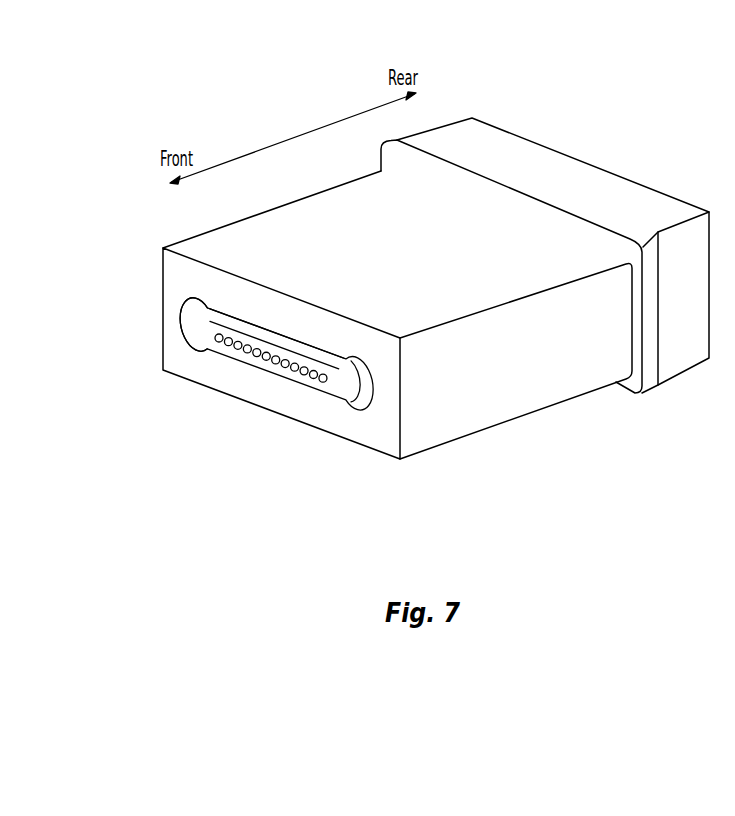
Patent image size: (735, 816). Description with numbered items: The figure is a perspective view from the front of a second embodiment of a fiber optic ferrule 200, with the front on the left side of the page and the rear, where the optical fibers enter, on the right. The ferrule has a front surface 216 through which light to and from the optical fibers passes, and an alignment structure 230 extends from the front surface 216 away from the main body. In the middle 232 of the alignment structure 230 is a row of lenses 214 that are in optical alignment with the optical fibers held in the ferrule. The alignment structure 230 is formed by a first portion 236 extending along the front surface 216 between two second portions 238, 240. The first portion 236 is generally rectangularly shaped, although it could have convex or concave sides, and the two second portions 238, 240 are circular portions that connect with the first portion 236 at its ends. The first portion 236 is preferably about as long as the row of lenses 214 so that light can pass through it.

The fiber optic ferrule 200 is at (567, 433).
The lenses 214 is at (219, 343).
The front surface 216 is at (362, 433).
The alignment structure 230 is at (277, 382).
The middle of the alignment structure 232 is at (277, 323).
The first portion 236 is at (298, 348).
The second portion 238 is at (353, 358).
The second portion 240 is at (203, 303).